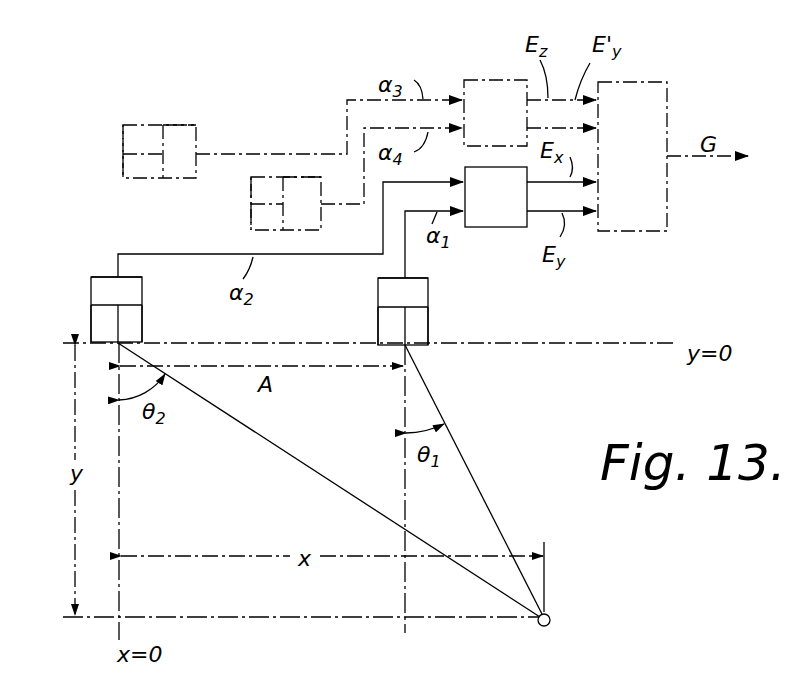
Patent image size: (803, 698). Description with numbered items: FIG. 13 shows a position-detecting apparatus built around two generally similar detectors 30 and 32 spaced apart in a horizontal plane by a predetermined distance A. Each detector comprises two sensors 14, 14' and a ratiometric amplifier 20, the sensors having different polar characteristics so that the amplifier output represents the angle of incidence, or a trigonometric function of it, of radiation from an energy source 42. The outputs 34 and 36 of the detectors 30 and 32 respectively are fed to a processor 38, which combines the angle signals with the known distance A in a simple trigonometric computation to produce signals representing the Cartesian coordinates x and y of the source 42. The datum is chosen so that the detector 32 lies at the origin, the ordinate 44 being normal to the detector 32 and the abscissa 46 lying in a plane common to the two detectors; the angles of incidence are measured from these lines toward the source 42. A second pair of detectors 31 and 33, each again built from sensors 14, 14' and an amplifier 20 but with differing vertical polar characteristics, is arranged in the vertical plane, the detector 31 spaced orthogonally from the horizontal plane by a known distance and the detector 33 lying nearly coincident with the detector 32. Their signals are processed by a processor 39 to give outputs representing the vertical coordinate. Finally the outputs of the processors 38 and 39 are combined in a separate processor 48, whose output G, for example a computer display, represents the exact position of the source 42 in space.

The detector 31 is at (123, 124).
The detector 33 is at (325, 227).
The detector 32 is at (90, 275).
The detector 30 is at (376, 305).
The ratiometric amplifier 20 is at (188, 133).
The sensor 14 is at (207, 211).
The sensor 14' is at (301, 249).
The output 36 is at (192, 254).
The output 34 is at (407, 258).
The processor 39 is at (530, 113).
The processor 38 is at (530, 197).
The separate processor 48 is at (673, 156).
The abscissa 46 is at (580, 343).
The ordinate 44 is at (120, 507).
The energy source 42 is at (551, 614).